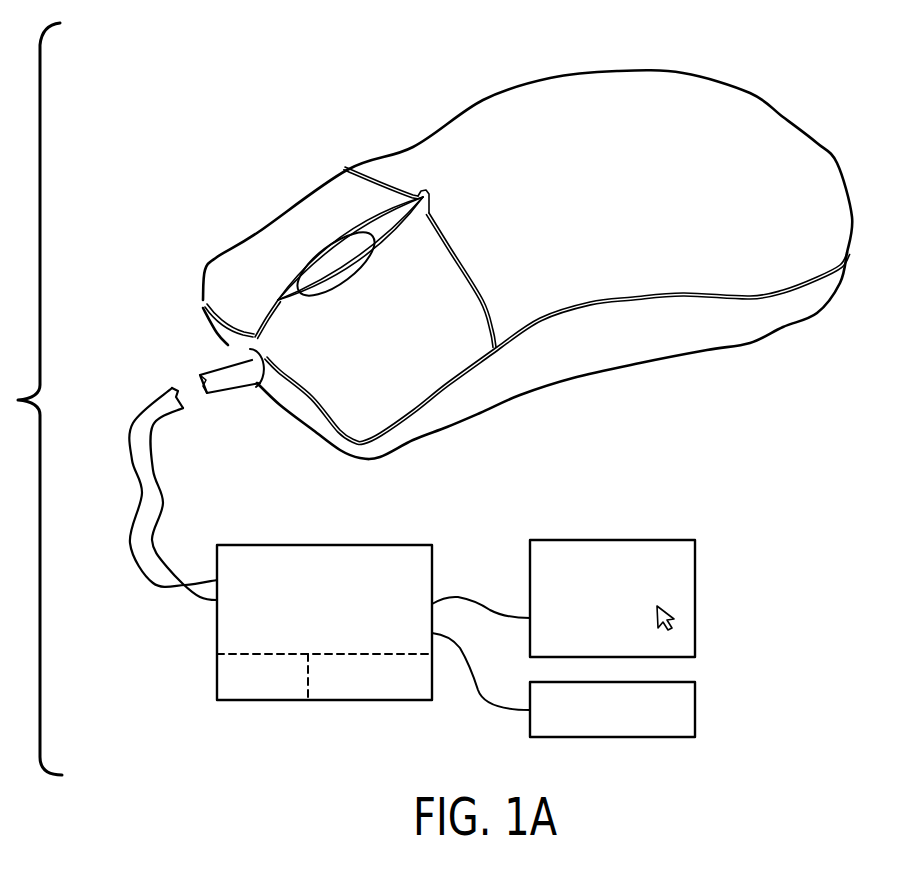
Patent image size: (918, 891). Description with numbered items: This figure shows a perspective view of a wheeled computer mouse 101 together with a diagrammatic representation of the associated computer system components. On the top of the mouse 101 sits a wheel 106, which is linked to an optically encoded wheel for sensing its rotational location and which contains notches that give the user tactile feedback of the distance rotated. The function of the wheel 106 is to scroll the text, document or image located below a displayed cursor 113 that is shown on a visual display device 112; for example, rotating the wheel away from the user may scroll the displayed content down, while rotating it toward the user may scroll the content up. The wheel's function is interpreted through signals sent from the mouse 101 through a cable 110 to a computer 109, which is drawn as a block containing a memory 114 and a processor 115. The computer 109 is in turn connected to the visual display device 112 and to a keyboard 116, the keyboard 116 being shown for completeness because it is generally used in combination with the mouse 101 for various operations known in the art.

The mouse 101 is at (461, 100).
The wheel 106 is at (336, 255).
The cable 110 is at (130, 432).
The computer 109 is at (230, 627).
The visual display device 112 is at (675, 555).
The displayed cursor 113 is at (672, 628).
The memory 114 is at (216, 699).
The processor 115 is at (383, 693).
The keyboard 116 is at (683, 702).